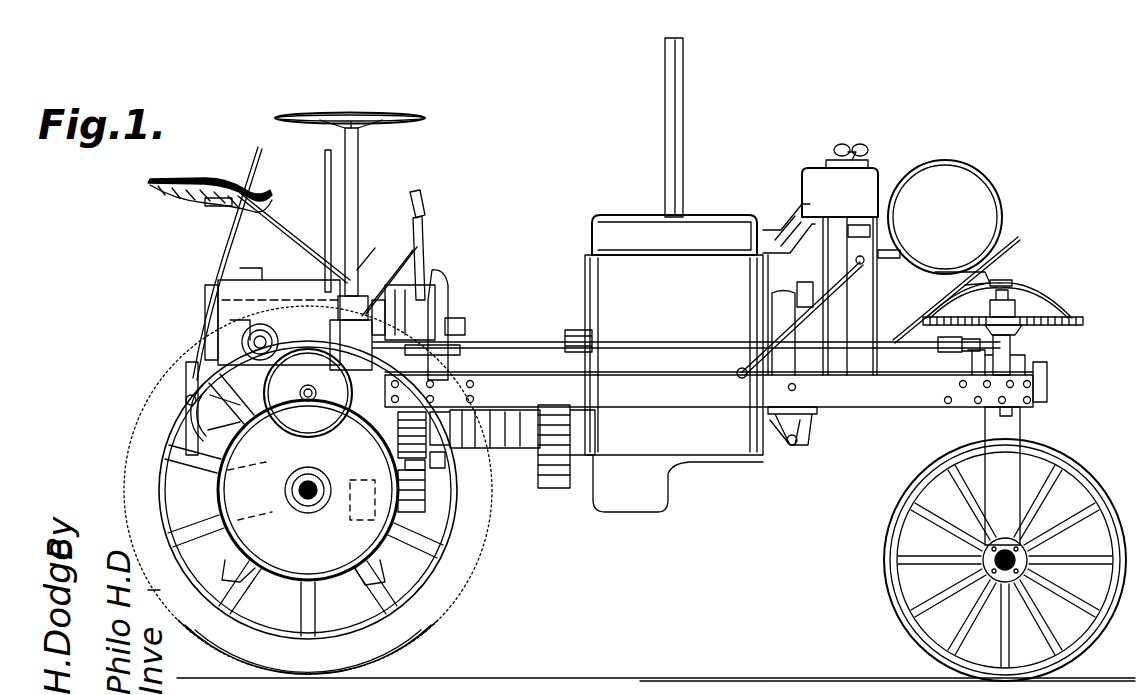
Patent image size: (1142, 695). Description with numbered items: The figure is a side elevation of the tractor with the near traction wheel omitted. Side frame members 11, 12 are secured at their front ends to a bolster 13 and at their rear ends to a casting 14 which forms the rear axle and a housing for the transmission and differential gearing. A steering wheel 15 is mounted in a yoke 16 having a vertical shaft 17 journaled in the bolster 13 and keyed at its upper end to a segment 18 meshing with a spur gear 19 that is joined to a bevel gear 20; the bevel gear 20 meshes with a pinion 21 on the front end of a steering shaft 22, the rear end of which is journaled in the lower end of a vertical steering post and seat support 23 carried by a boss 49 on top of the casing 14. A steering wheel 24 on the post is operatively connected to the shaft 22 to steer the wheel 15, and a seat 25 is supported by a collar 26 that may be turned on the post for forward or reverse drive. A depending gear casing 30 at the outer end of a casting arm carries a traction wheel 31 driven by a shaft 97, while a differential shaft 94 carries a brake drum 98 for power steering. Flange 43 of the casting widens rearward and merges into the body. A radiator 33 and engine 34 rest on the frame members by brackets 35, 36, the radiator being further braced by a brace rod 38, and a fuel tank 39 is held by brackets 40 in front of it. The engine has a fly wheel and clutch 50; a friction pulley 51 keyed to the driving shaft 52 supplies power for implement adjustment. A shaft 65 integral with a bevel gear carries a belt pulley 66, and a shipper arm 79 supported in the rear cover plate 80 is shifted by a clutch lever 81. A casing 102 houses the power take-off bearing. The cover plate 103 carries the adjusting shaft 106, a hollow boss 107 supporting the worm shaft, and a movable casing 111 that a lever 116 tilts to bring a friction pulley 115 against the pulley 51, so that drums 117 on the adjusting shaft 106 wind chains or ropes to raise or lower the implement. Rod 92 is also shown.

The side frame member 11 is at (185, 452).
The side frame member 12 is at (910, 395).
The bolster 13 is at (1050, 386).
The casting 14 is at (190, 466).
The steering wheel 15 is at (1114, 452).
The yoke 16 is at (985, 433).
The vertical shaft 17 is at (1006, 284).
The segment 18 is at (1070, 318).
The spur gear 19 is at (1025, 300).
The bevel gear 20 is at (1022, 332).
The pinion 21 is at (1012, 352).
The steering shaft 22 is at (908, 349).
The steering post and seat support 23 is at (358, 220).
The steering wheel 24 is at (425, 120).
The seat 25 is at (150, 190).
The collar 26 is at (332, 265).
The gear casing 30 is at (400, 505).
The traction wheel 31 is at (405, 645).
The radiator 33 is at (872, 182).
The engine 34 is at (712, 220).
The bracket 35 is at (572, 350).
The bracket 36 is at (868, 392).
The brace rod 38 is at (862, 300).
The fuel tank 39 is at (992, 202).
The bracket 40 is at (1012, 250).
The flange 43 is at (460, 374).
The boss 49 is at (425, 312).
The fly wheel and clutch 50 is at (568, 482).
The friction pulley 51 is at (430, 440).
The driving shaft 52 is at (455, 440).
The shaft 65 is at (196, 446).
The belt pulley 66 is at (192, 430).
The shipper arm 79 is at (184, 397).
The rear cover plate 80 is at (180, 380).
The clutch lever 81 is at (252, 185).
The control rod 92 is at (325, 180).
The differential shaft 94 is at (246, 345).
The shaft 97 is at (330, 505).
The brake drum 98 is at (245, 338).
The casing 102 is at (412, 470).
The cover plate 103 is at (260, 278).
The adjusting shaft 106 is at (265, 330).
The hollow boss 107 is at (213, 272).
The movable casing 111 is at (445, 296).
The friction pulley 115 is at (455, 322).
The lever 116 is at (423, 200).
The drum 117 is at (240, 328).